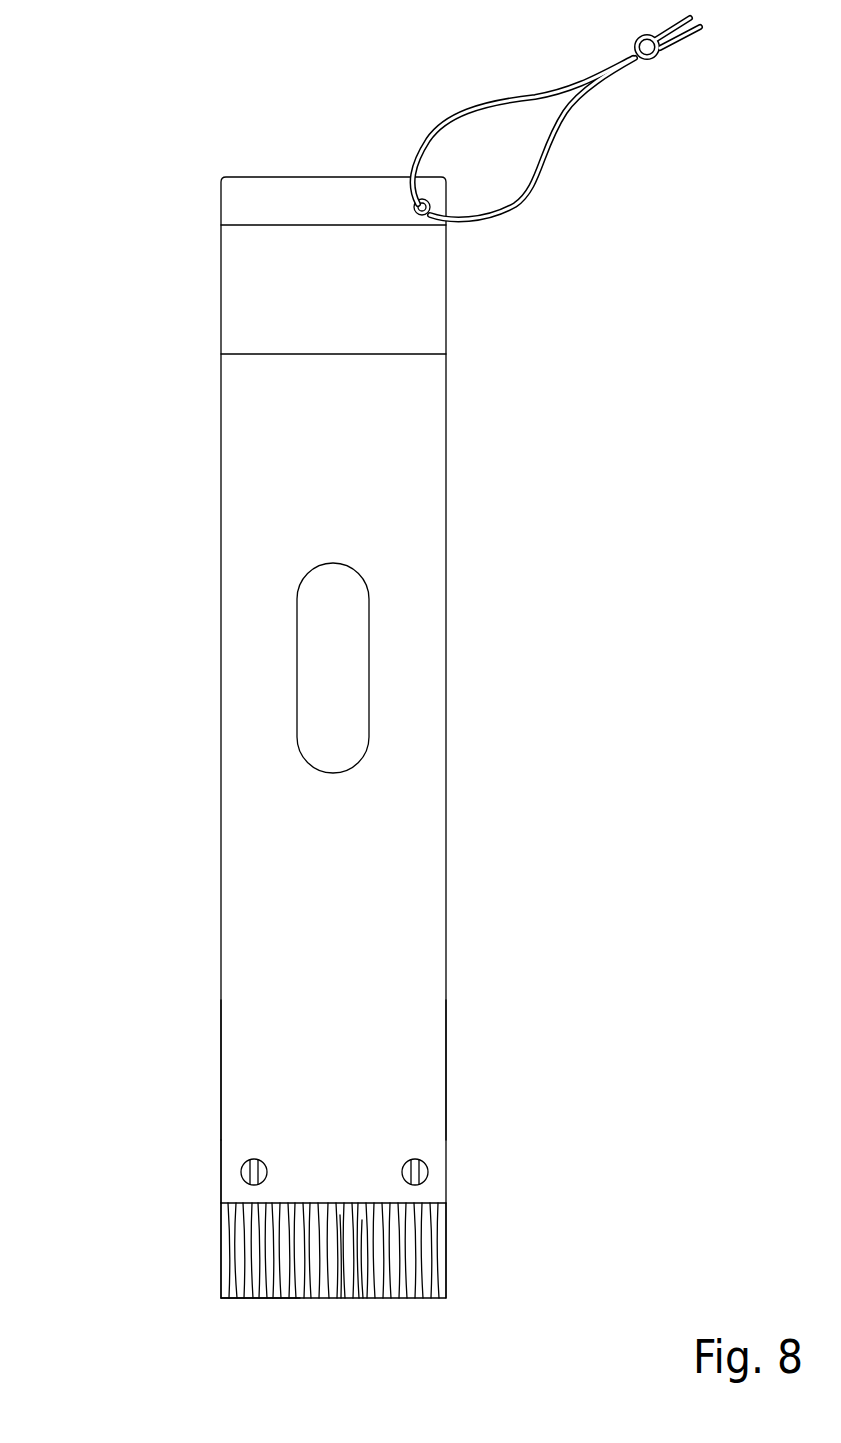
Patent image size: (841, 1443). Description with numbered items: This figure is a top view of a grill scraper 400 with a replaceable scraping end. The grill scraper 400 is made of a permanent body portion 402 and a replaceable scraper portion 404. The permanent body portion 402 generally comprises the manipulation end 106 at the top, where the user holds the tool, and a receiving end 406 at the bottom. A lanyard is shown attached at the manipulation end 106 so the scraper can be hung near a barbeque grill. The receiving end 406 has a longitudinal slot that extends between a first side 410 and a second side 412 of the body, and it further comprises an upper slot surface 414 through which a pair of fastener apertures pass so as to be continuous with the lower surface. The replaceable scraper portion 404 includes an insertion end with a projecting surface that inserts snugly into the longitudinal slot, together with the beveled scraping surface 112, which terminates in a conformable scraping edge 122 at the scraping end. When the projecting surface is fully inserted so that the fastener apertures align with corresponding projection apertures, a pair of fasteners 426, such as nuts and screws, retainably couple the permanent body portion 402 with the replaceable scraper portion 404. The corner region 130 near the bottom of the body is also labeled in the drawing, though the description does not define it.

The grill scraper 400 is at (396, 703).
The permanent body portion 402 is at (221, 785).
The manipulation end 106 is at (293, 177).
The first side 410 is at (220, 1067).
The second side 412 is at (446, 1065).
The upper slot surface 414 is at (233, 1162).
The fasteners 426 is at (241, 1175).
The receiving end 406 is at (446, 1203).
The replaceable scraper portion 404 is at (446, 1258).
The bottom corner 130 is at (222, 1287).
The beveled scraping surface 112 is at (297, 1253).
The conformable scraping edge 122 is at (382, 1298).